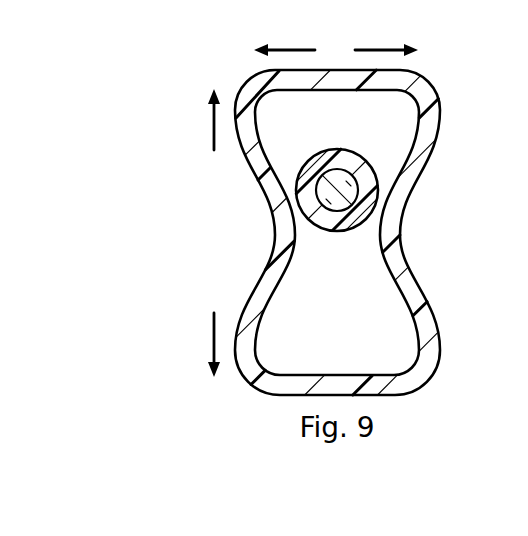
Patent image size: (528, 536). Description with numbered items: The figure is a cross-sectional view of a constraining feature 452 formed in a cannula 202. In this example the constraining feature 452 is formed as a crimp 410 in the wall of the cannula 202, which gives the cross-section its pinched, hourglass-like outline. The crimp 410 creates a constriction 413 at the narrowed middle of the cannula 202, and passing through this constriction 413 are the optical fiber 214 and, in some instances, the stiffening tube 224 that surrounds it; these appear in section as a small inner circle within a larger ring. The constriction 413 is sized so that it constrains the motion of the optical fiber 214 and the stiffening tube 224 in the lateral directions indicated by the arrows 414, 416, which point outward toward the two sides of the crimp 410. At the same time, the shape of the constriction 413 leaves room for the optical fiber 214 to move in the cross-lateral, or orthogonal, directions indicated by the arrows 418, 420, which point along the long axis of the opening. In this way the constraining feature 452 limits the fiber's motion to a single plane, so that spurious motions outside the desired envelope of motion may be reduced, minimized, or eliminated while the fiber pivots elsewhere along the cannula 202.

The cannula 202 is at (440, 130).
The optical fiber 214 is at (320, 172).
The stiffening tube 224 is at (354, 157).
The crimp 410 is at (274, 231).
The constriction 413 is at (334, 239).
The lateral direction arrow 414 is at (291, 45).
The lateral direction arrow 416 is at (382, 46).
The cross-lateral direction arrow 418 is at (212, 123).
The cross-lateral direction arrow 420 is at (212, 342).
The constraining feature 452 is at (415, 238).